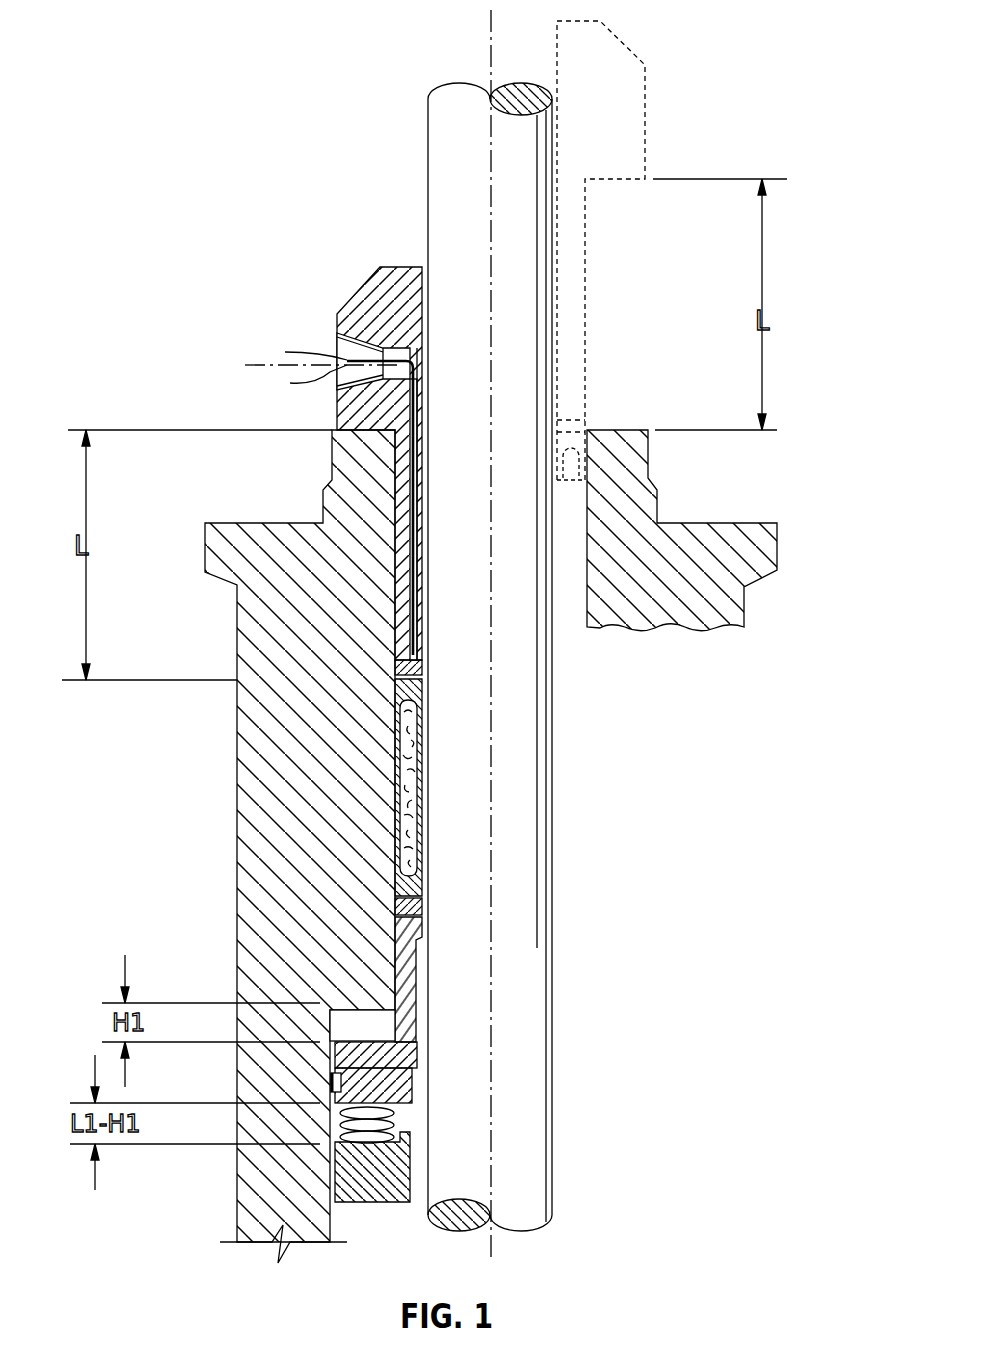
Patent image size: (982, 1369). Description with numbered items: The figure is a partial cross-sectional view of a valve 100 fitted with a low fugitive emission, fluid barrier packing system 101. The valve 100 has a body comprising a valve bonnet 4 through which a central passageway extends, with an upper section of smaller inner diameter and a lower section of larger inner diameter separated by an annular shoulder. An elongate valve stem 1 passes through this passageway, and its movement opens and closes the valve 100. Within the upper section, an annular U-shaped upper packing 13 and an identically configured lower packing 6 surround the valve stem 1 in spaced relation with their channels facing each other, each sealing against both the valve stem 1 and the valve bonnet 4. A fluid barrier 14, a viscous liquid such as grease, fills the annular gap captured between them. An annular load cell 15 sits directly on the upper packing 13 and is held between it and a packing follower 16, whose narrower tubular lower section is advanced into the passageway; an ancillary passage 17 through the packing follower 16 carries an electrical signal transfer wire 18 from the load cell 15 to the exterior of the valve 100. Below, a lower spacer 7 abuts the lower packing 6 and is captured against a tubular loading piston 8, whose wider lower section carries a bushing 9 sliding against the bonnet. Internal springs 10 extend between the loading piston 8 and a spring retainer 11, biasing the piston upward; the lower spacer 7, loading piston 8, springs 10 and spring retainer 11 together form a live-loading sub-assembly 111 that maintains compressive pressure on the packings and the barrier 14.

The valve stem 1 is at (430, 190).
The valve bonnet 4 is at (257, 608).
The lower packing 6 is at (422, 885).
The lower spacer 7 is at (400, 905).
The loading piston 8 is at (407, 1030).
The bushing 9 is at (400, 1068).
The internal springs 10 is at (400, 1120).
The spring retainer 11 is at (335, 1177).
The upper packing 13 is at (395, 700).
The fluid barrier 14 is at (420, 770).
The load cell 15 is at (423, 672).
The packing follower 16 is at (365, 300).
The ancillary passage 17 is at (415, 418).
The electrical signal transfer wire 18 is at (423, 325).
The valve 100 is at (220, 115).
The packing system 101 is at (368, 862).
The live-loading sub-assembly 111 is at (428, 993).